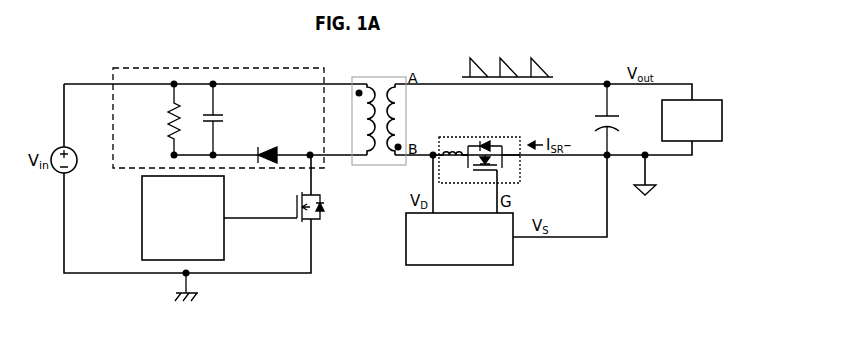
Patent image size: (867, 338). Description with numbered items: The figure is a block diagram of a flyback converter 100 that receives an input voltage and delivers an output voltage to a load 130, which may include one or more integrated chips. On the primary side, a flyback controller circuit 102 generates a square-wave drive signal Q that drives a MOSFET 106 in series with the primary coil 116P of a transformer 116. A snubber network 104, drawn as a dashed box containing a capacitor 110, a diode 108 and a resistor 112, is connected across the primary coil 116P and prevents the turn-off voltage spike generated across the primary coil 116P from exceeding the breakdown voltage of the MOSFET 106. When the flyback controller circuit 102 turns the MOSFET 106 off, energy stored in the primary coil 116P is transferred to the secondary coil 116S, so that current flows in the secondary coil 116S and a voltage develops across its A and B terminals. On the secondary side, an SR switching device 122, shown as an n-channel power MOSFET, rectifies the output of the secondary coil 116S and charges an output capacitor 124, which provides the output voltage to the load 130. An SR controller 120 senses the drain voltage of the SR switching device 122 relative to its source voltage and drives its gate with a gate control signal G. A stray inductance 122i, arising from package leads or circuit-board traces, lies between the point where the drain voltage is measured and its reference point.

The flyback converter 100 is at (581, 46).
The flyback controller circuit 102 is at (142, 198).
The snubber network 104 is at (110, 70).
The MOSFET 106 is at (296, 222).
The diode 108 is at (259, 146).
The capacitor 110 is at (220, 113).
The resistor 112 is at (167, 121).
The transformer 116 is at (388, 166).
The primary coil 116P is at (363, 84).
The secondary coil 116S is at (391, 84).
The SR controller 120 is at (406, 232).
The SR switching device 122 is at (520, 180).
The stray inductance 122i is at (447, 150).
The output capacitor 124 is at (597, 118).
The load 130 is at (722, 117).